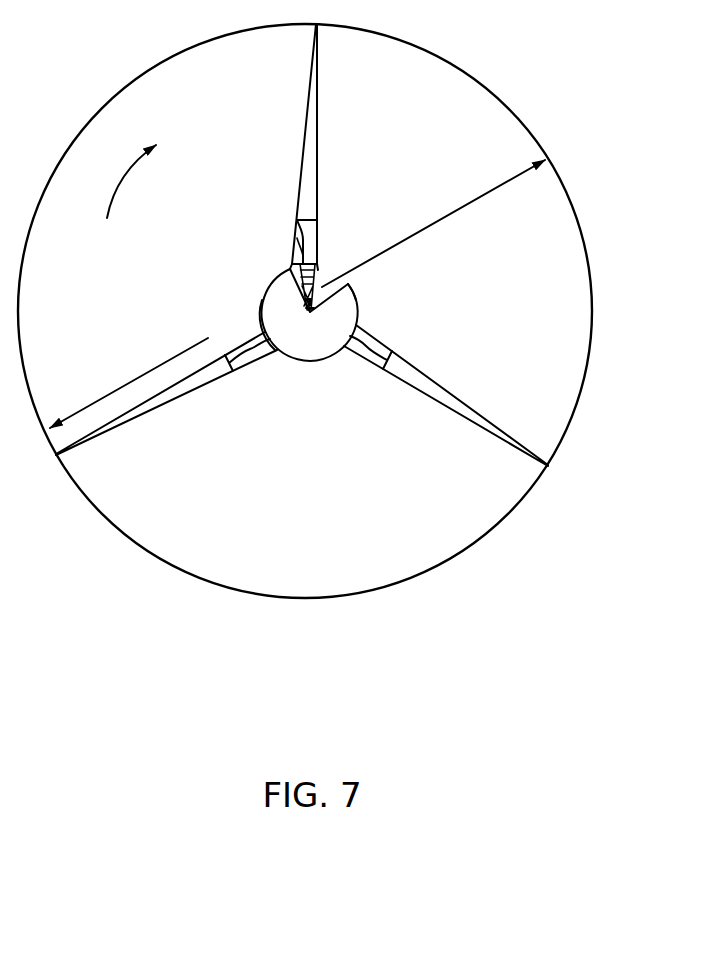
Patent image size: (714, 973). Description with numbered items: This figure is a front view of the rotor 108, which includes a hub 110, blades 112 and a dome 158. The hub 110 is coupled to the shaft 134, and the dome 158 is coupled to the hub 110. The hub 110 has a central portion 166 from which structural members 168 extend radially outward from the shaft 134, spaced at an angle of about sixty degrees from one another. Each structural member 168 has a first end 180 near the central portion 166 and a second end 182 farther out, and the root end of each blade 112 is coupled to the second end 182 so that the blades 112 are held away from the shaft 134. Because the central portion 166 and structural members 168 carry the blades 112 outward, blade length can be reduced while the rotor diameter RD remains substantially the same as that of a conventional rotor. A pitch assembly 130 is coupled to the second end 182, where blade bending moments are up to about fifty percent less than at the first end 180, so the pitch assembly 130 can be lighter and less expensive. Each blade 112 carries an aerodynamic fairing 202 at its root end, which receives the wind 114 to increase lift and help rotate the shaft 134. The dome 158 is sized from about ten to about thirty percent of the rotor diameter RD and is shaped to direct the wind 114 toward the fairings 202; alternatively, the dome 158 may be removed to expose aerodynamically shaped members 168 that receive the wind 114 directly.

The rotor 108 is at (247, 491).
The hub 110 is at (226, 260).
The blades 112 is at (512, 437).
The wind 114 is at (128, 172).
The pitch assembly 130 is at (318, 264).
The shaft 134 is at (309, 313).
The dome 158 is at (265, 290).
The central portion 166 is at (311, 314).
The structural members 168 is at (305, 268).
The first end 180 is at (264, 303).
The second end 182 is at (348, 286).
The aerodynamic fairing 202 is at (297, 238).
The rotor diameter RD is at (432, 224).